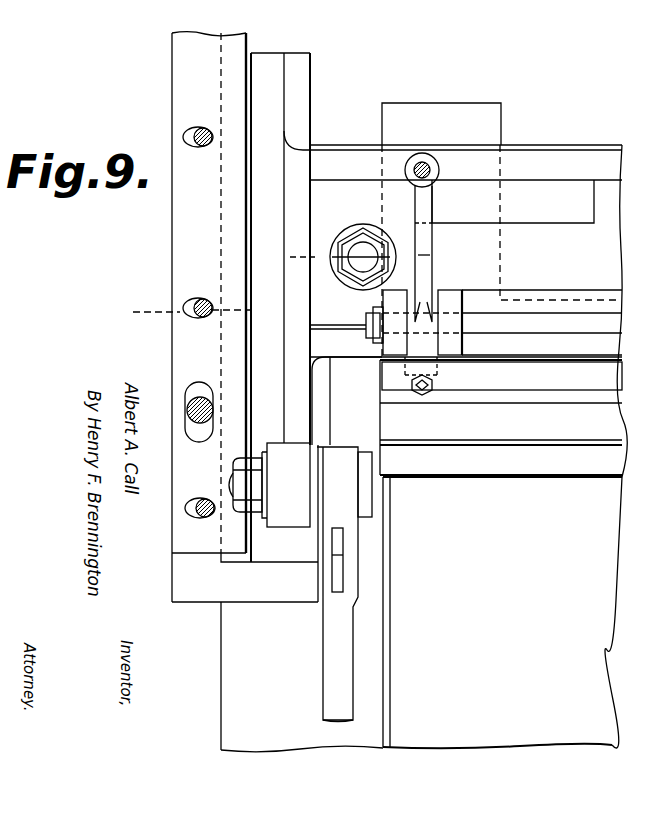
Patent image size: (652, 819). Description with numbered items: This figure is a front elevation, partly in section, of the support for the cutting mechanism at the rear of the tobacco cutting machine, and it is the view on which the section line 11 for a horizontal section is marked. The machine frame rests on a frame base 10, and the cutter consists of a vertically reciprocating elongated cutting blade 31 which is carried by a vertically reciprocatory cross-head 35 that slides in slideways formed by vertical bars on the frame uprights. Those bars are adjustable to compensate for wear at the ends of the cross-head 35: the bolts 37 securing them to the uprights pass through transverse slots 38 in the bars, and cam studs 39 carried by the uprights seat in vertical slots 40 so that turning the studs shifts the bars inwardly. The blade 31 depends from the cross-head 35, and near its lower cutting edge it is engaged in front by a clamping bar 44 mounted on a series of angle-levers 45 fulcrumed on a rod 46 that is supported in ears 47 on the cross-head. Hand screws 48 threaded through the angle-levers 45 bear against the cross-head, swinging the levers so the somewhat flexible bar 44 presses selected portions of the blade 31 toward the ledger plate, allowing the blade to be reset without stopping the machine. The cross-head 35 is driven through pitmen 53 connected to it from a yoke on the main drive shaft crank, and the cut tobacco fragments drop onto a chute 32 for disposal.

The frame base 10 is at (430, 255).
The section line 11— 11 is at (245, 755).
The cutting blade 31 is at (495, 133).
The chute 32 is at (502, 612).
The cross-head 35 is at (314, 104).
The bolts 37 is at (202, 318).
The transverse slots 38 is at (190, 300).
The cam studs 39 is at (199, 400).
The vertical slots 40 is at (200, 438).
The clamping bar 44 is at (502, 376).
The angle-levers 45 is at (427, 282).
The rod 46 is at (570, 290).
The ears 47 is at (485, 288).
The hand screws 48 is at (426, 164).
The pitmen 53 is at (328, 660).